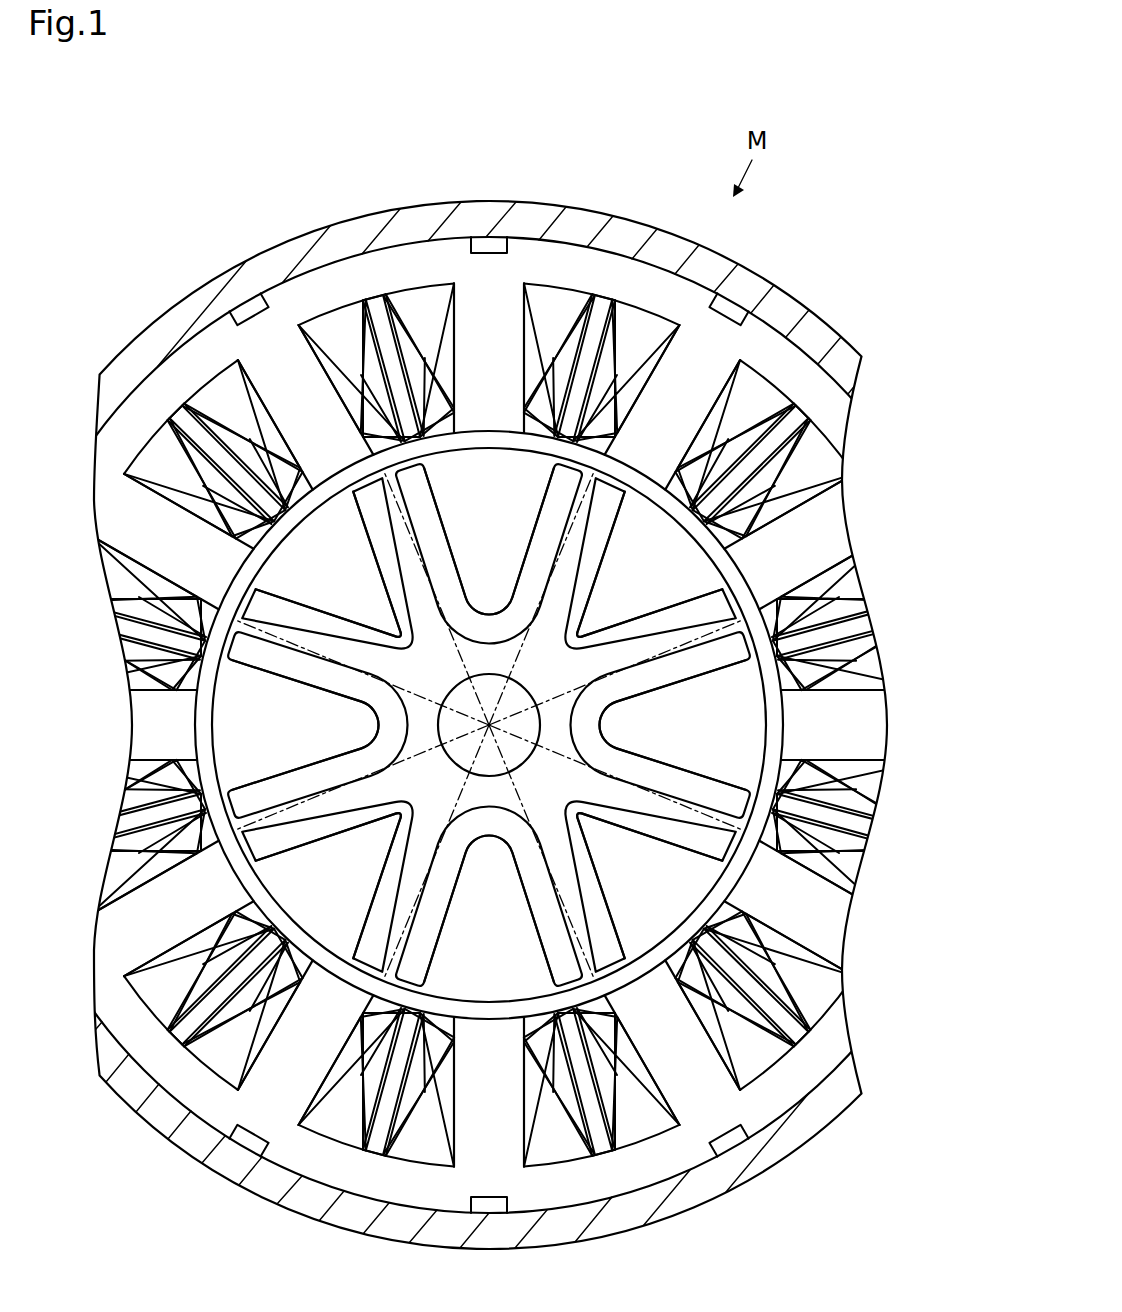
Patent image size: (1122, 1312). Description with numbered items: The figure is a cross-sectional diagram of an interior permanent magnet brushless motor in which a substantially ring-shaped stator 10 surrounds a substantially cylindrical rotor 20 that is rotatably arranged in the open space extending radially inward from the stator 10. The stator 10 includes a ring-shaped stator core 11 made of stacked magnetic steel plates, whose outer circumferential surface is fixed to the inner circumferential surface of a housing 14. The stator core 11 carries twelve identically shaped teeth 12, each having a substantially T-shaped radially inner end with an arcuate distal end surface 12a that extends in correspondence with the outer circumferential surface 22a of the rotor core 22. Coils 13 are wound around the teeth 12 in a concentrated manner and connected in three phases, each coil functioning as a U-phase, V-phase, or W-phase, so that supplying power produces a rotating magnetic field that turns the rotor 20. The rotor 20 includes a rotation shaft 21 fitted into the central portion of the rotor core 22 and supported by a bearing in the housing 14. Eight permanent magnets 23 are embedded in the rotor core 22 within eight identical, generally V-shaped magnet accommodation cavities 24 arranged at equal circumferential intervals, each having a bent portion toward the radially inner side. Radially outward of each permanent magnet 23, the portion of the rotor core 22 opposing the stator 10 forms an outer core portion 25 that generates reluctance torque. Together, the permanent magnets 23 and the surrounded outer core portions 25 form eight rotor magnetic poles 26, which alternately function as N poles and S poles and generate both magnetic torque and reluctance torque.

The stator 10 is at (489, 725).
The stator core 11 is at (785, 352).
The teeth 12 is at (657, 372).
The arcuate distal end surface 12a is at (345, 474).
The coils 13 is at (527, 300).
The housing 14 is at (297, 262).
The rotor 20 is at (490, 726).
The rotation shaft 21 is at (535, 668).
The rotor core 22 is at (582, 714).
The outer circumferential surface of rotor core 22a is at (773, 673).
The permanent magnets 23 is at (437, 517).
The magnet accommodation cavities 24 is at (452, 548).
The outer core portion 25 is at (490, 448).
The rotor magnetic poles 26 is at (268, 551).